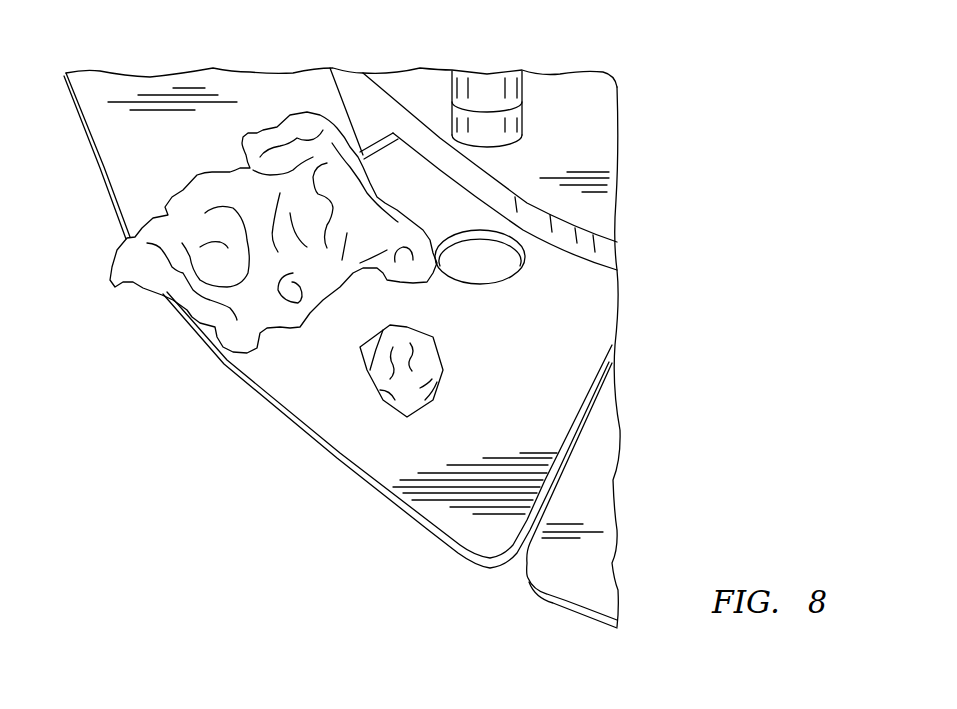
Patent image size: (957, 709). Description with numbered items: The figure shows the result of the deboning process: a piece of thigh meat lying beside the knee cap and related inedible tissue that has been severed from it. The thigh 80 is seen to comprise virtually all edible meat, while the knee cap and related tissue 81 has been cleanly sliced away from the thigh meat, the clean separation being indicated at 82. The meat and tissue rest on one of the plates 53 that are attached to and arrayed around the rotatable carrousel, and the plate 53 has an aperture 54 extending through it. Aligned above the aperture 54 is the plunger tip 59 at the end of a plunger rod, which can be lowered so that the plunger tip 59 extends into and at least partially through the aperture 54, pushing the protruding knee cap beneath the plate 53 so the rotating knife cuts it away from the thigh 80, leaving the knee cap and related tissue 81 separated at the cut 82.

The plate 53 is at (558, 379).
The aperture 54 is at (483, 285).
The plunger tip 59 is at (522, 110).
The thigh 80 is at (193, 173).
The knee cap and related tissue 81 is at (408, 377).
The sliced cut location 82 is at (368, 355).